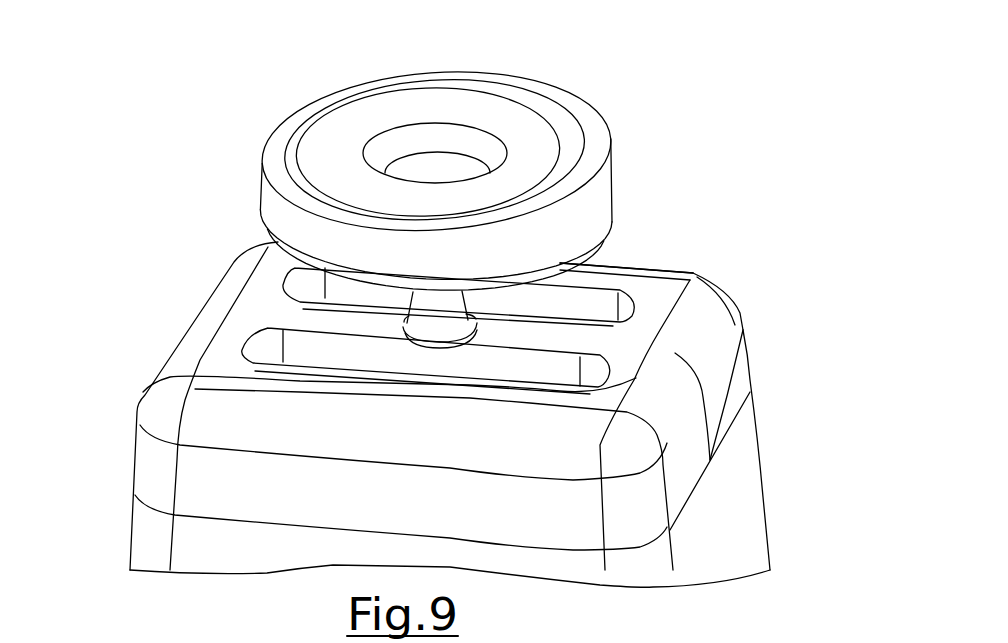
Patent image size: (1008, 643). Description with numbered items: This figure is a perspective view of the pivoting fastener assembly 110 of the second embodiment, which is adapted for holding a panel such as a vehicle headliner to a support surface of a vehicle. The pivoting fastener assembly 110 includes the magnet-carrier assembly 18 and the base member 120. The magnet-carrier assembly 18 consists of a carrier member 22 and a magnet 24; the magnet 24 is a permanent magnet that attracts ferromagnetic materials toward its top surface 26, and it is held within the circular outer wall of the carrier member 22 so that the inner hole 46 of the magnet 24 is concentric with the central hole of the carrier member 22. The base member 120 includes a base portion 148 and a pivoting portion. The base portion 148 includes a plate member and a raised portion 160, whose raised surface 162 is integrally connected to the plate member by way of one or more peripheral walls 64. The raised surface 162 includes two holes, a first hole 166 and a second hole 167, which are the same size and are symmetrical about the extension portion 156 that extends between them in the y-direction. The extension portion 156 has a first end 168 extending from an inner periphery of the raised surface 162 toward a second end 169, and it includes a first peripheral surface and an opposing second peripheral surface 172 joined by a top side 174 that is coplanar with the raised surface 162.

The magnet-carrier assembly 18 is at (424, 146).
The carrier member 22 is at (297, 112).
The magnet 24 is at (455, 103).
The top surface 26 is at (362, 115).
The inner hole 46 is at (427, 133).
The peripheral walls 64 is at (758, 433).
The pivoting fastener assembly 110 is at (607, 70).
The base member 120 is at (648, 170).
The base portion 148 is at (723, 318).
The extension portion 156 is at (583, 337).
The raised portion 160 is at (708, 276).
The raised surface 162 is at (273, 263).
The first hole 166 is at (292, 297).
The second hole 167 is at (278, 357).
The first end 168 is at (260, 307).
The second end 169 is at (663, 300).
The second peripheral surface 172 is at (590, 338).
The top side 174 is at (557, 337).